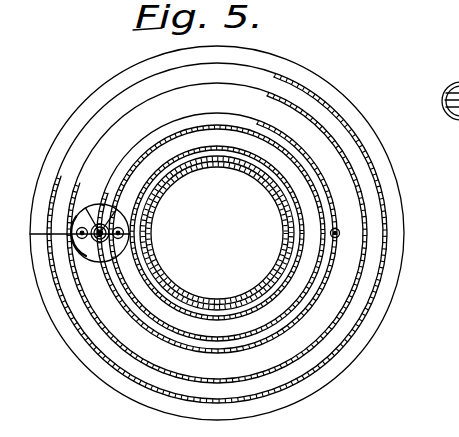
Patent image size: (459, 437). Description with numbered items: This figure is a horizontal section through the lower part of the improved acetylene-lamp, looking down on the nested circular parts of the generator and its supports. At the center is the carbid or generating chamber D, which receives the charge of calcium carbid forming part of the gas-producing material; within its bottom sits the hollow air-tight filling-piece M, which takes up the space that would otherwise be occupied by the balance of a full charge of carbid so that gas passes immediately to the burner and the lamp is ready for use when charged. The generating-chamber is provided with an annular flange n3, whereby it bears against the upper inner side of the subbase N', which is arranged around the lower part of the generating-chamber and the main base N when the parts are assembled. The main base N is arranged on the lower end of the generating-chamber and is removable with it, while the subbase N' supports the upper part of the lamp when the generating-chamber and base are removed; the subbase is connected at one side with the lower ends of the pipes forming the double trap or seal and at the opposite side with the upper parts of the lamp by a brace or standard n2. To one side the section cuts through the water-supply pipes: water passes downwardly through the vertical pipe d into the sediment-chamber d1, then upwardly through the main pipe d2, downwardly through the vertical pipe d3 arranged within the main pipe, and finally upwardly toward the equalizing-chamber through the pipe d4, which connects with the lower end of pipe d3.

The main base N is at (217, 233).
The subbase N' is at (217, 233).
The brace or standard n2 is at (337, 230).
The annular flange n3 is at (199, 130).
The carbid or generating chamber D is at (229, 308).
The hollow air-tight filling-piece M is at (228, 247).
The vertical pipe d is at (130, 234).
The sediment-chamber d1 is at (96, 252).
The main pipe d2 is at (91, 205).
The vertical pipe d3 is at (120, 210).
The pipe d4 is at (80, 235).